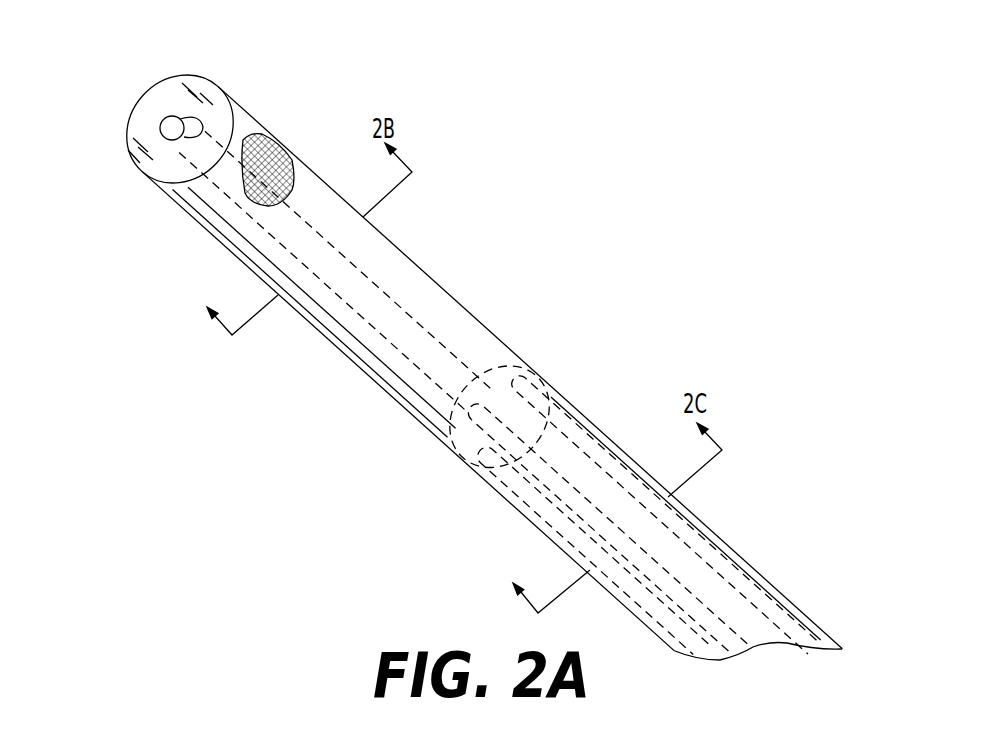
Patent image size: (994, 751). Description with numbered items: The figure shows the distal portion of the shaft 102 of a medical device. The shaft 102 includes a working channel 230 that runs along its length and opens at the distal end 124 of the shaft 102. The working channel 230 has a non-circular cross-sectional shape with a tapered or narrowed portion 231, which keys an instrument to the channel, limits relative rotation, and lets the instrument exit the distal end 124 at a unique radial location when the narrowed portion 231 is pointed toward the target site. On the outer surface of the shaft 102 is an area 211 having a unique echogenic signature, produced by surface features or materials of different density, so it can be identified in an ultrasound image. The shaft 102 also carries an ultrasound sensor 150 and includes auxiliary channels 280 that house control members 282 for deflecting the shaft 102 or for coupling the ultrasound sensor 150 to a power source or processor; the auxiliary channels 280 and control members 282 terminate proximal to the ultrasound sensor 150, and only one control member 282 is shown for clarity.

The shaft 102 is at (58, 253).
The distal end 124 is at (210, 76).
The narrowed portion 231 is at (208, 120).
The area 211 is at (292, 152).
The ultrasound sensor 150 is at (382, 247).
The working channel 230 is at (390, 342).
The control member 282 is at (697, 533).
The auxiliary channel 280 is at (770, 597).